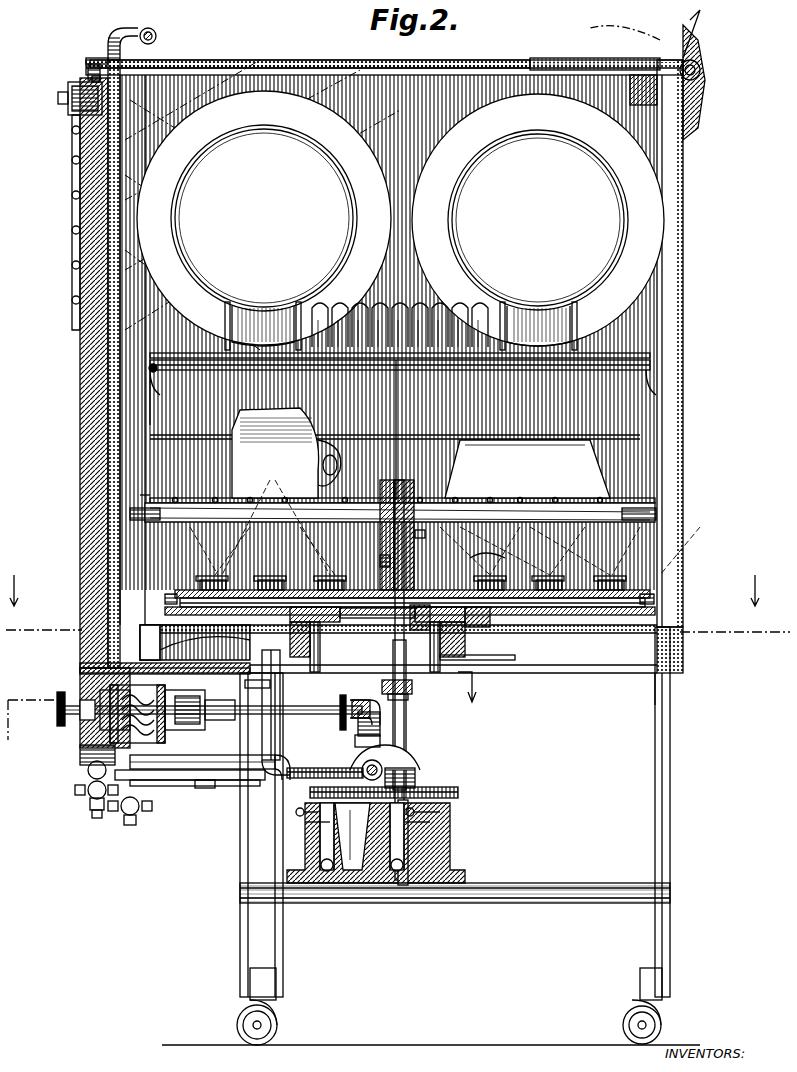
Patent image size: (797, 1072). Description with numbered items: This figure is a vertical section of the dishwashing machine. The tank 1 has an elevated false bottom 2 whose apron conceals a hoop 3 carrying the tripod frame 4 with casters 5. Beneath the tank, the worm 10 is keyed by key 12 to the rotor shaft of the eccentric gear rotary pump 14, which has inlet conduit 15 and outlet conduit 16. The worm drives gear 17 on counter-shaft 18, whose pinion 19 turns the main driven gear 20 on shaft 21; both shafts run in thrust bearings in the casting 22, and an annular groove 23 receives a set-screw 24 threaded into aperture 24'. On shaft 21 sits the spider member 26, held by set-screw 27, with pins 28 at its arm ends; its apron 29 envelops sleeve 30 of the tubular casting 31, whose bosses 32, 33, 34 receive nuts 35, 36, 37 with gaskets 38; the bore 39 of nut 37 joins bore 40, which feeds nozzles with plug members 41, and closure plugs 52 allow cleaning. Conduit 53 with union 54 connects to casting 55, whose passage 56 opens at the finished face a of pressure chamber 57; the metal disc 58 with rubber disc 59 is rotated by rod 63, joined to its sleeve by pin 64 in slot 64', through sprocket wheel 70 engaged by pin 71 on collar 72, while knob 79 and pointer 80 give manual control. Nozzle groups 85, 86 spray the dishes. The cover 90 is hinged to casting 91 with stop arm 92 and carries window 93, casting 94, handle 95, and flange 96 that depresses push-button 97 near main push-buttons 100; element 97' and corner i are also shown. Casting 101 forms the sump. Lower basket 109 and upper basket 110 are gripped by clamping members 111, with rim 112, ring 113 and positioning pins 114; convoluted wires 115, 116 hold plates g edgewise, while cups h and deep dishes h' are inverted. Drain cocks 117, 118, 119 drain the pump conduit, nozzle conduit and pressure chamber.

The tank 1 is at (683, 215).
The bottom 2 is at (540, 630).
The hoop 3 is at (672, 670).
The tripod frame 4 is at (670, 800).
The casters 5 is at (623, 1022).
The worm 10 is at (388, 768).
The key 12 is at (252, 714).
The eccentric gear rotary pump 14 is at (404, 750).
The inlet conduit 15 is at (160, 780).
The outlet conduit 16 is at (282, 715).
The gear 17 is at (338, 772).
The counter-shaft 18 is at (300, 838).
The pinion 19 is at (287, 773).
The main driven gear 20 is at (458, 790).
The shaft 21 is at (406, 728).
The casting 22 is at (358, 883).
The annular groove 23 is at (380, 828).
The set-screw 24 is at (343, 814).
The aperture 24' is at (341, 828).
The spider member 26 is at (515, 543).
The set-screw 27 is at (425, 534).
The pins 28 is at (140, 497).
The apron 29 is at (382, 535).
The sleeve 30 is at (380, 560).
The tubular casting 31 is at (430, 590).
The apertured boss 32 is at (655, 610).
The apertured boss 33 is at (425, 616).
The apertured boss 34 is at (369, 613).
The nut or plug member 35 is at (480, 660).
The nut or plug member 36 is at (430, 637).
The nut 37 is at (310, 640).
The gaskets 38 is at (555, 640).
The central bore or conduit 39 is at (330, 580).
The bore or conduit 40 is at (250, 575).
The hollow plug member 41 is at (272, 577).
The closure plugs 52 is at (165, 598).
The conduit 53 is at (250, 755).
The union 54 is at (88, 782).
The casting 55 is at (80, 240).
The channel or passage 56 is at (88, 762).
The pressure chamber 57 is at (165, 730).
The metal disc 58 is at (95, 810).
The hard rubber disc 59 is at (80, 668).
The rod 63 is at (330, 706).
The pin 64 is at (199, 704).
The slot 64' is at (220, 719).
The sprocket wheel 70 is at (327, 718).
The rotating arm or pin 71 is at (366, 702).
The collar 72 is at (412, 687).
The knurled knob 79 is at (57, 700).
The pointer 80 is at (100, 725).
The group of centrifugal nozzles 85 is at (72, 160).
The group of centrifugal nozzles 86 is at (72, 195).
The cover 90 is at (590, 58).
The casting 91 is at (700, 108).
The stop arm 92 is at (700, 62).
The glass window 93 is at (518, 50).
The casting 94 is at (119, 35).
The handle or grip member 95 is at (156, 34).
The projecting horizontal flange 96 is at (95, 58).
The auxiliary push-button 97 is at (73, 66).
The fitting 97' is at (63, 82).
The main push-buttons 100 is at (58, 98).
The casting 101 is at (195, 642).
The lower basket 109 is at (660, 415).
The upper basket 110 is at (640, 353).
The clamping members 111 is at (130, 515).
The wire rim 112 is at (150, 368).
The ring 113 is at (150, 362).
The positioning pins 114 is at (150, 390).
The convoluted wire 115 is at (228, 300).
The convoluted wire 116 is at (320, 300).
The drain cock 117 is at (130, 824).
The drain cock 118 is at (97, 818).
The drain cock 119 is at (210, 785).
The finished face a is at (80, 690).
The plates g is at (400, 218).
The cups h is at (286, 453).
The deep dishes h' is at (527, 469).
The corner post i is at (683, 648).